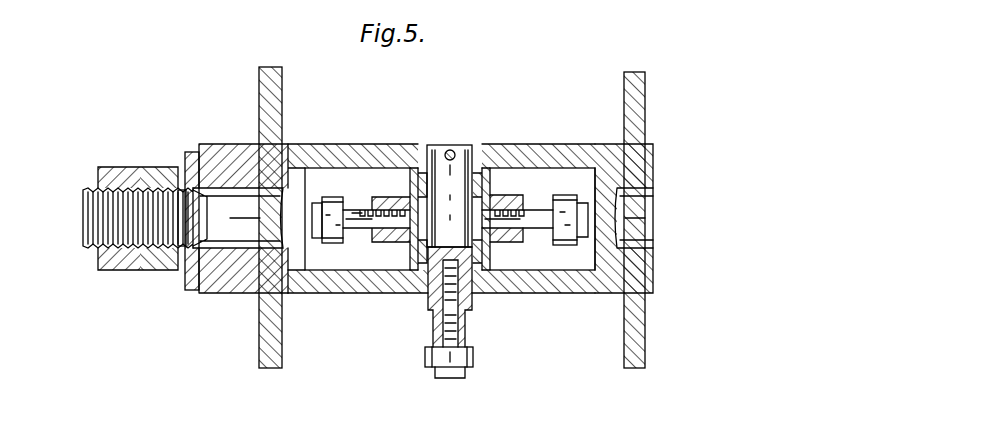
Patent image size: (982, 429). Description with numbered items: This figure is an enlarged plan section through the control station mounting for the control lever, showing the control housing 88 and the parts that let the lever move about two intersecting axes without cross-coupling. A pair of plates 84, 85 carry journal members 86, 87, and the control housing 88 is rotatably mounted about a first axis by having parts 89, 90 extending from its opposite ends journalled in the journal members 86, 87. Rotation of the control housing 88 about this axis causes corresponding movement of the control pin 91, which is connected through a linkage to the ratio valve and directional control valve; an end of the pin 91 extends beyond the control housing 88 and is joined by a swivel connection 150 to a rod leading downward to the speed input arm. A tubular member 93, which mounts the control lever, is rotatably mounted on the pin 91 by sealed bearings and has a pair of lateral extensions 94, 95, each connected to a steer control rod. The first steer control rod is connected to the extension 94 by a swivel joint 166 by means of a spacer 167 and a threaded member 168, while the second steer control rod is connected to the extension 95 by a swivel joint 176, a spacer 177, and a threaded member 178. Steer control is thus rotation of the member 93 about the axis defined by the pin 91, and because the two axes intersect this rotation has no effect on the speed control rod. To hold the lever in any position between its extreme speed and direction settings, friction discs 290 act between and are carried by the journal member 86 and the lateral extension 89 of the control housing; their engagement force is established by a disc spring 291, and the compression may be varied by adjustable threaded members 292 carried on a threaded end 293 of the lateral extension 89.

The plate 84 is at (280, 352).
The plate 85 is at (639, 325).
The journal member 86 is at (230, 160).
The journal member 87 is at (643, 170).
The control housing 88 is at (538, 287).
The housing part (lateral extension) 89 is at (264, 193).
The housing part 90 is at (641, 222).
The control pin 91 is at (430, 293).
The tubular member 93 is at (478, 147).
The lateral extension 94 is at (387, 242).
The lateral extension 95 is at (512, 248).
The swivel connection 150 is at (467, 356).
The swivel joint 166 is at (335, 195).
The spacer 167 is at (356, 220).
The threaded member 168 is at (360, 223).
The swivel joint 176 is at (577, 193).
The spacer 177 is at (538, 205).
The threaded member 178 is at (498, 200).
The friction discs 290 is at (193, 293).
The disc spring 291 is at (183, 242).
The adjustable threaded members 292 is at (137, 171).
The threaded end 293 is at (90, 228).